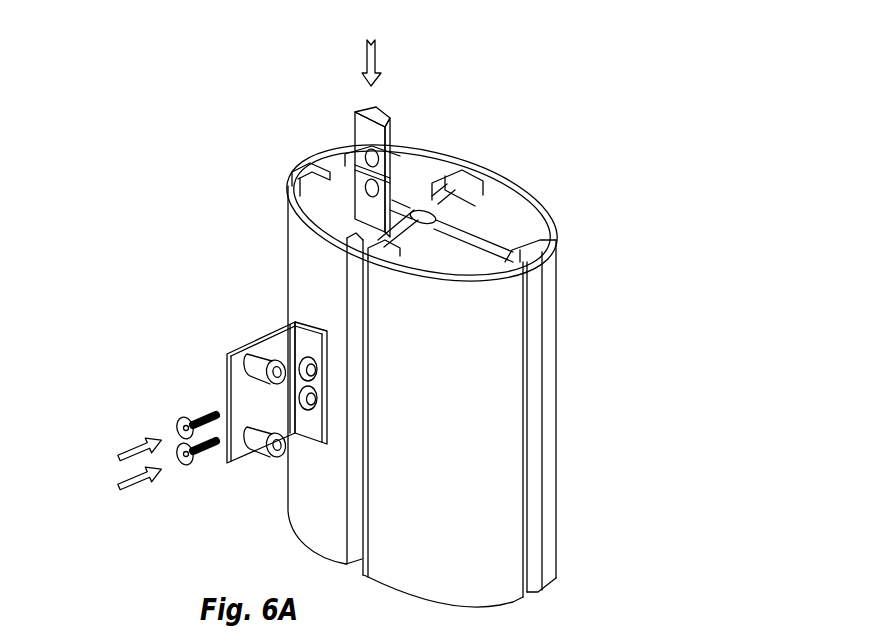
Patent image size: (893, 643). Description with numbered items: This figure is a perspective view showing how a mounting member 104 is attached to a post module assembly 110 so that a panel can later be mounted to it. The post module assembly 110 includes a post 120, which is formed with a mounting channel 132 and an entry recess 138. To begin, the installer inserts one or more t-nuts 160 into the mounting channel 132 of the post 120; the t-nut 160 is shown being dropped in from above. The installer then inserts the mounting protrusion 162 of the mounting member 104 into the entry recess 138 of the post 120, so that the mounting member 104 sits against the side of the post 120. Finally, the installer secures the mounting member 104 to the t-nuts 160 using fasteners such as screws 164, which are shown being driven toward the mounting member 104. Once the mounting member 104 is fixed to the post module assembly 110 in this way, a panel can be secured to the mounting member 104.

The post module assembly 110 is at (458, 364).
The post 120 is at (448, 230).
The mounting channel 132 is at (382, 264).
The entry recess 138 is at (352, 537).
The t-nut 160 is at (388, 100).
The mounting member 104 is at (223, 323).
The mounting protrusion 162 is at (322, 330).
The screws 164 is at (187, 468).